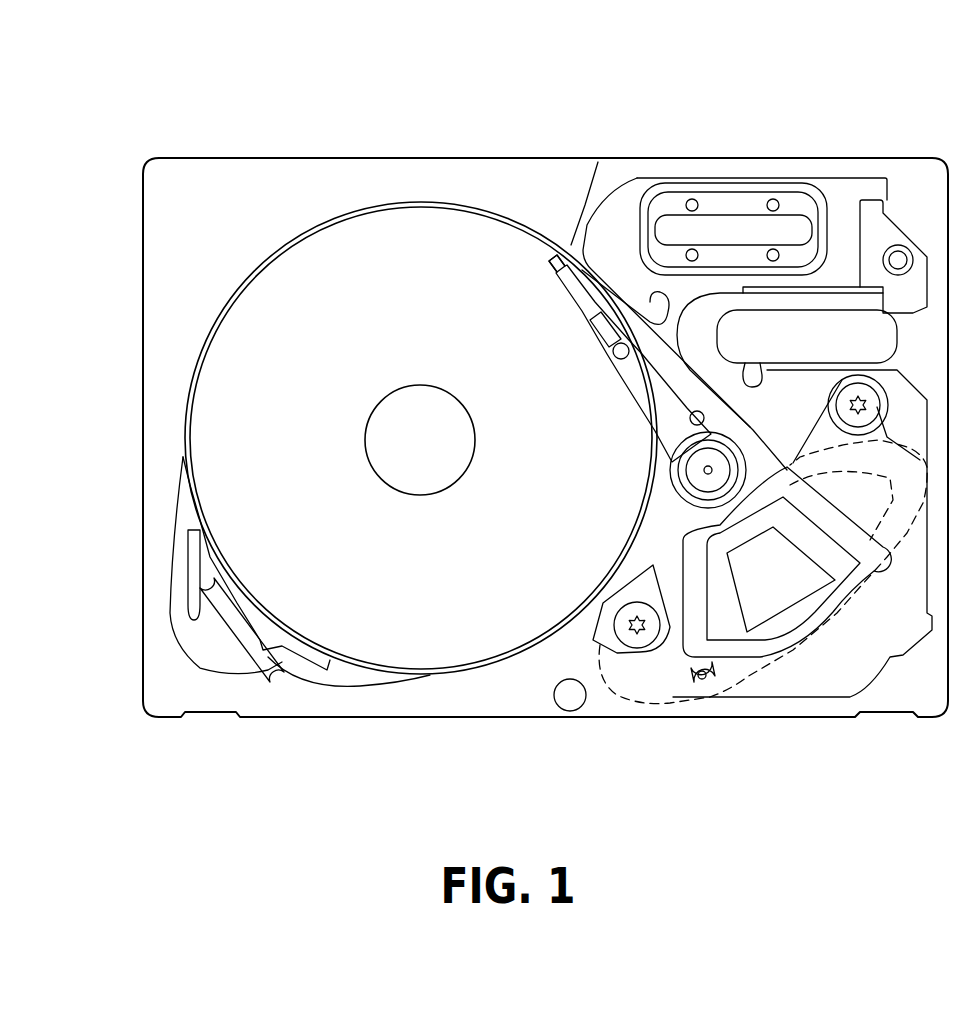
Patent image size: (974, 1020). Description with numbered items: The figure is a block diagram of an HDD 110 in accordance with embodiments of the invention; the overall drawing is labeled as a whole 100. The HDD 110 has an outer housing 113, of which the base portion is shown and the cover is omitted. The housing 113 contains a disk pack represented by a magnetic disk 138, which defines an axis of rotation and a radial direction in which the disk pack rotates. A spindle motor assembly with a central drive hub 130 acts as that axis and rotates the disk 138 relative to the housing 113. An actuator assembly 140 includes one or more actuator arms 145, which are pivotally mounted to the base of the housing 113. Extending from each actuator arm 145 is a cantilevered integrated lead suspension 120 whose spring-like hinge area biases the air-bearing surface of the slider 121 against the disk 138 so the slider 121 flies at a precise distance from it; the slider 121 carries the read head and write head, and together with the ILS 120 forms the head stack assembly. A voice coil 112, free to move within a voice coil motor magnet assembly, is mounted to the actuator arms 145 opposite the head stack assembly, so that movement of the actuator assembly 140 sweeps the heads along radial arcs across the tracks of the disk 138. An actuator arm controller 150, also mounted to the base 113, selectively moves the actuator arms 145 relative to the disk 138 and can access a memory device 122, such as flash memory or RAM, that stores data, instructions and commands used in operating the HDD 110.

The hard disk drive 100 is at (75, 59).
The HDD 110 is at (268, 156).
The outer housing 113 is at (492, 158).
The magnetic disk 138 is at (415, 204).
The central drive hub 130 is at (397, 455).
The slider 121 is at (598, 163).
The integrated lead suspension 120 is at (578, 312).
The actuator arm 145 is at (623, 390).
The actuator assembly 140 is at (668, 497).
The voice coil 112 is at (707, 618).
The actuator arm controller 150 is at (870, 670).
The memory device 122 is at (810, 660).